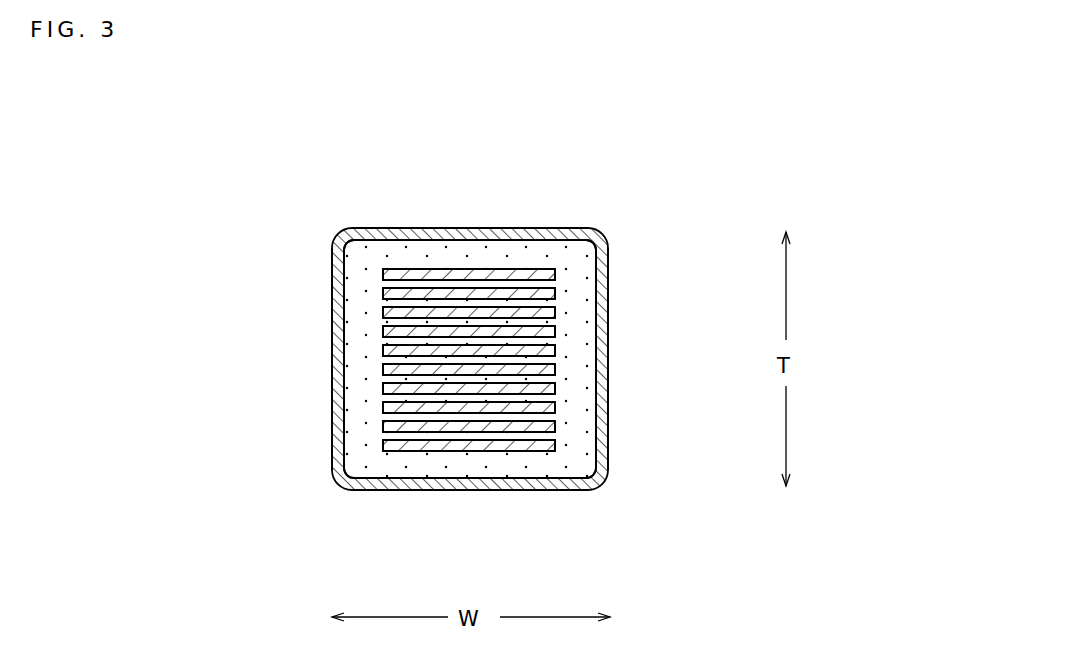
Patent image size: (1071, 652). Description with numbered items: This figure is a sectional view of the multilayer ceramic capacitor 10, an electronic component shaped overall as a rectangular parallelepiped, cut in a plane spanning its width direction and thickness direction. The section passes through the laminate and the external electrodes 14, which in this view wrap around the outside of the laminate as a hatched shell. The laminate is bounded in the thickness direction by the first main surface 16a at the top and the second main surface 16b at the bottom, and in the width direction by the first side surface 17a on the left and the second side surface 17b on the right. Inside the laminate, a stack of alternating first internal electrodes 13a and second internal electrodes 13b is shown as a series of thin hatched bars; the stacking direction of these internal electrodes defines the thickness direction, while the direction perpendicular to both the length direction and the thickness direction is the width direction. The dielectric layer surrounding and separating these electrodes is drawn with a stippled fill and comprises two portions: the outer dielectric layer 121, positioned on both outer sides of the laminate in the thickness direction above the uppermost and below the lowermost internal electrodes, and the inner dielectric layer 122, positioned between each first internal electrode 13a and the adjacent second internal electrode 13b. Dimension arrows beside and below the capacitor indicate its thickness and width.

The multilayer ceramic capacitor 10 is at (463, 319).
The external electrodes 14 is at (333, 388).
The outer dielectric layer 121 is at (462, 257).
The inner dielectric layer 122 is at (424, 288).
The first internal electrode 13a is at (537, 308).
The second internal electrode 13b is at (549, 414).
The first main surface 16a is at (380, 231).
The second main surface 16b is at (468, 493).
The first side surface 17a is at (340, 313).
The second side surface 17b is at (598, 311).